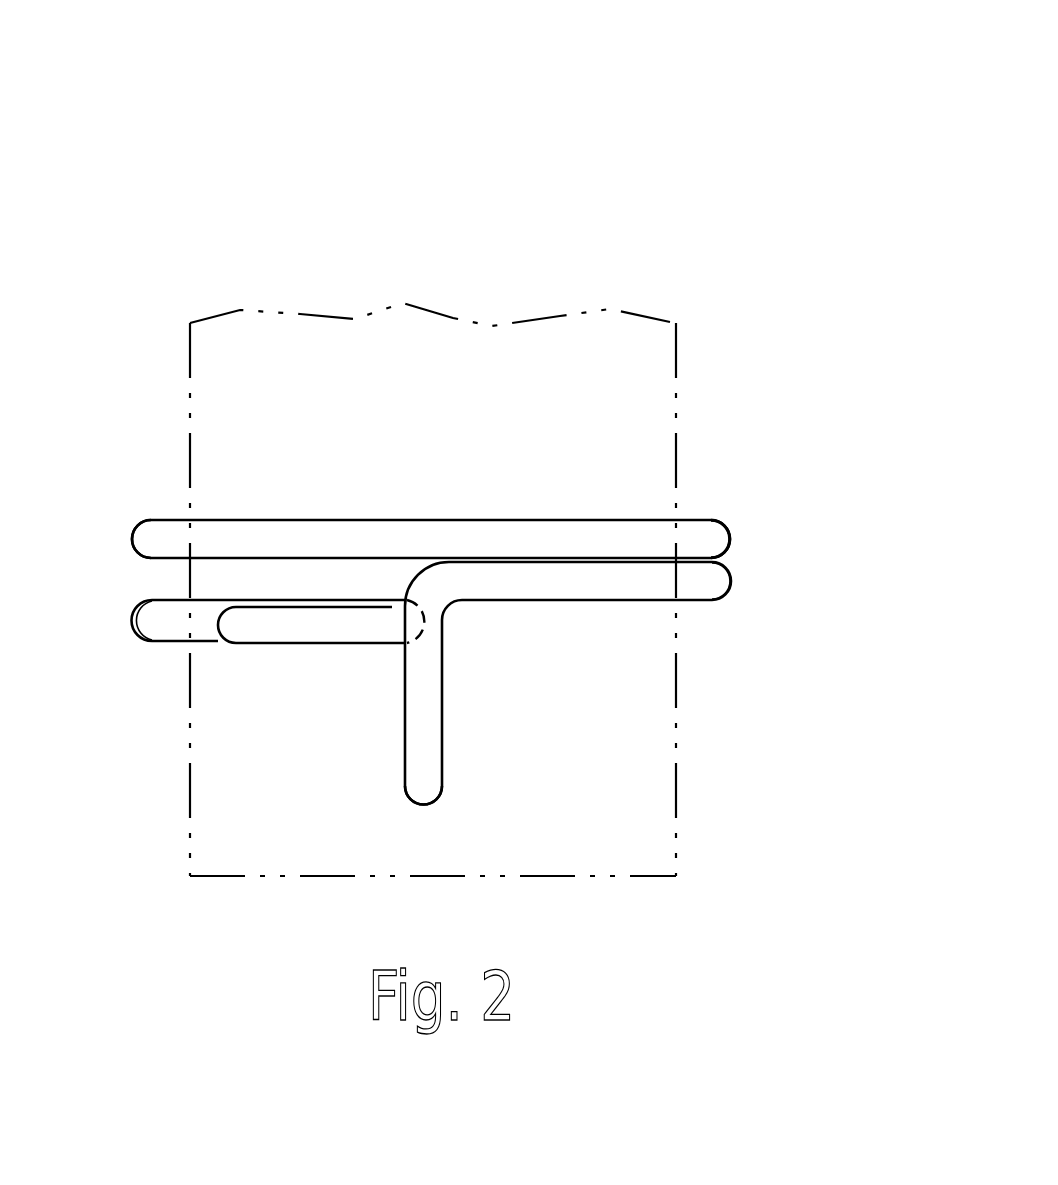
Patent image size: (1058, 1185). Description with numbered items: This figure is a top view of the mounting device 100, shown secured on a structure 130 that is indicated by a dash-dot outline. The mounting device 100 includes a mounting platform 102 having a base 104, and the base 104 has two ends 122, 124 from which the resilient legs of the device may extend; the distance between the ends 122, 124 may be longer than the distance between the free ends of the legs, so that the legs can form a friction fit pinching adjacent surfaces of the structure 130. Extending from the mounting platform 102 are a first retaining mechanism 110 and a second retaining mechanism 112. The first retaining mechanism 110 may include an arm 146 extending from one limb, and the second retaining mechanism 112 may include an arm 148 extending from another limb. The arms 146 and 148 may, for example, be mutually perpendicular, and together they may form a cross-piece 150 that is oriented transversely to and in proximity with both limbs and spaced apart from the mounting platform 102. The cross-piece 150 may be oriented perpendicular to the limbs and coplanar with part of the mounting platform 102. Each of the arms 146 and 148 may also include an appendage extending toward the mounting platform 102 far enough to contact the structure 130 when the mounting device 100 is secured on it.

The mounting device 100 is at (638, 136).
The mounting platform 102 is at (487, 511).
The base 104 is at (657, 532).
The first retaining mechanism 110 is at (265, 667).
The second retaining mechanism 112 is at (460, 684).
The end of the base 122 is at (126, 522).
The end of the base 124 is at (734, 519).
The structure 130 is at (360, 447).
The arm 146 is at (342, 645).
The arm 148 is at (432, 762).
The cross-piece 150 is at (395, 589).